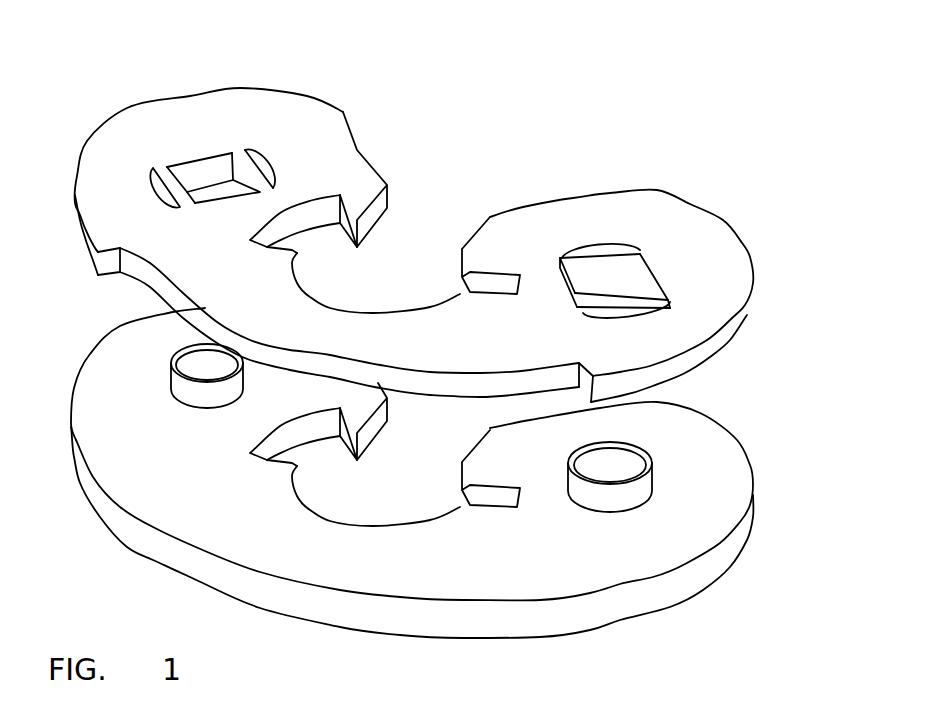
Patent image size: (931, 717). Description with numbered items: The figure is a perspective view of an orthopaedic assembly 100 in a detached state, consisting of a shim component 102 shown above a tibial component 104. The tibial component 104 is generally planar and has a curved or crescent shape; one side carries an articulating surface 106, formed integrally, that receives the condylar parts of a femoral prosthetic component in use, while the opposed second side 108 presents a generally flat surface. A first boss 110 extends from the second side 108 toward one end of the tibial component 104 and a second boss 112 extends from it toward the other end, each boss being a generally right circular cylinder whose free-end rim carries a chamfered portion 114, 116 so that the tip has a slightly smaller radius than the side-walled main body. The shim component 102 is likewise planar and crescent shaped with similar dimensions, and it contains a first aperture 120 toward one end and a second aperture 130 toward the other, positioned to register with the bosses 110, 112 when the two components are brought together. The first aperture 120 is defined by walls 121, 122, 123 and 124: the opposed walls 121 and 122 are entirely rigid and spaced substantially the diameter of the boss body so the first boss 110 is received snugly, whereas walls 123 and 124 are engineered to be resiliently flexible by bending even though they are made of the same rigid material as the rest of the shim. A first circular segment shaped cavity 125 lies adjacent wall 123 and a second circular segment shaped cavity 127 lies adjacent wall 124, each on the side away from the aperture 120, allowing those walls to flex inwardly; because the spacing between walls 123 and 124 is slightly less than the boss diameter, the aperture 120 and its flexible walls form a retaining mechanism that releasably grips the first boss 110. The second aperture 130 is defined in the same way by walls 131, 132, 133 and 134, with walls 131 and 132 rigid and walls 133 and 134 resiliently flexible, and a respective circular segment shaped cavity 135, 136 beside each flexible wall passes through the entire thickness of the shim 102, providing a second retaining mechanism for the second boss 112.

The orthopaedic assembly 100 is at (684, 124).
The shim component 102 is at (735, 222).
The tibial component 104 is at (747, 450).
The articulating surface 106 is at (663, 610).
The second side 108 is at (657, 550).
The first boss 110 is at (647, 483).
The second boss 112 is at (184, 391).
The chamfered portion 114 is at (622, 453).
The chamfered portion 116 is at (197, 360).
The first aperture 120 is at (640, 282).
The wall 121 is at (552, 277).
The wall 122 is at (650, 262).
The wall 123 is at (587, 257).
The wall 124 is at (630, 316).
The first circular segment shaped cavity 125 is at (613, 243).
The second circular segment shaped cavity 127 is at (605, 340).
The second aperture 130 is at (200, 177).
The wall 131 is at (230, 203).
The wall 132 is at (221, 157).
The wall 133 is at (255, 155).
The wall 134 is at (163, 170).
The circular segment shaped cavity 135 is at (273, 170).
The circular segment shaped cavity 136 is at (162, 190).